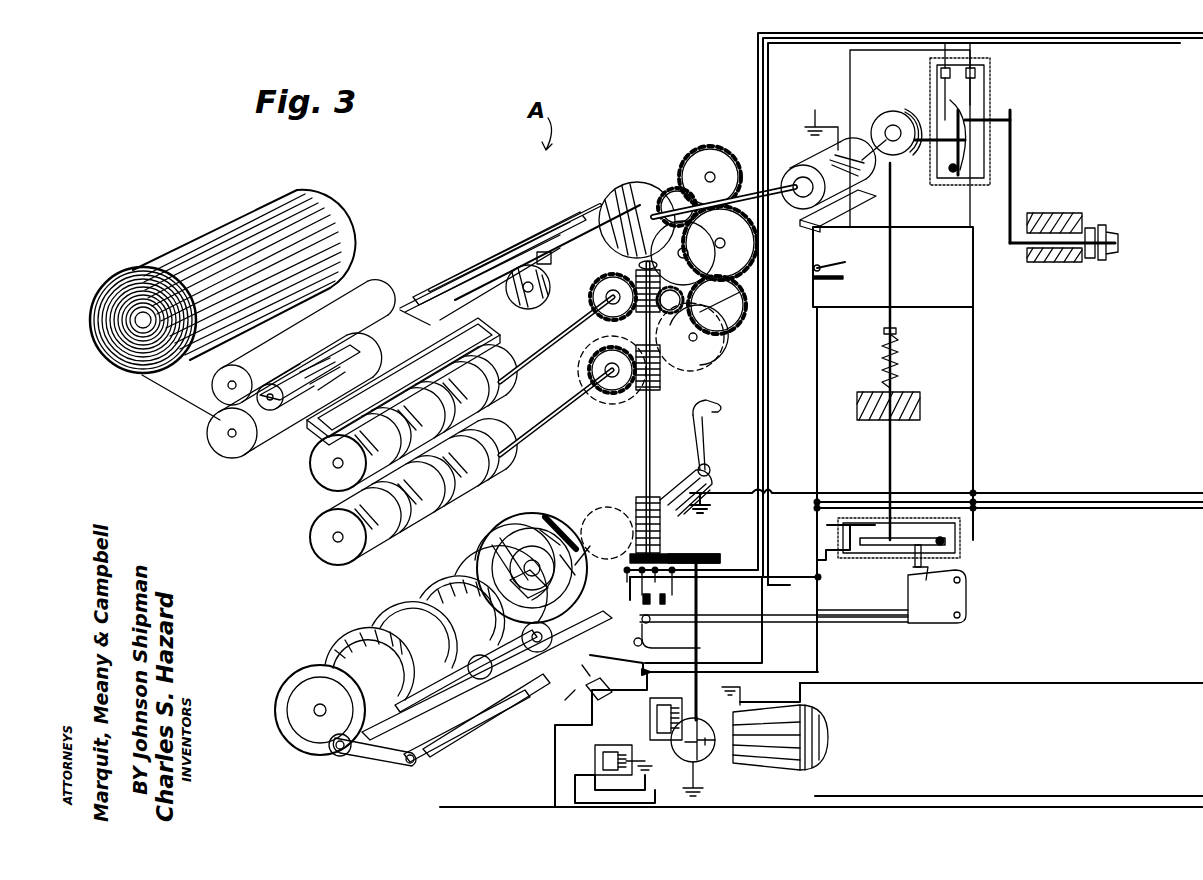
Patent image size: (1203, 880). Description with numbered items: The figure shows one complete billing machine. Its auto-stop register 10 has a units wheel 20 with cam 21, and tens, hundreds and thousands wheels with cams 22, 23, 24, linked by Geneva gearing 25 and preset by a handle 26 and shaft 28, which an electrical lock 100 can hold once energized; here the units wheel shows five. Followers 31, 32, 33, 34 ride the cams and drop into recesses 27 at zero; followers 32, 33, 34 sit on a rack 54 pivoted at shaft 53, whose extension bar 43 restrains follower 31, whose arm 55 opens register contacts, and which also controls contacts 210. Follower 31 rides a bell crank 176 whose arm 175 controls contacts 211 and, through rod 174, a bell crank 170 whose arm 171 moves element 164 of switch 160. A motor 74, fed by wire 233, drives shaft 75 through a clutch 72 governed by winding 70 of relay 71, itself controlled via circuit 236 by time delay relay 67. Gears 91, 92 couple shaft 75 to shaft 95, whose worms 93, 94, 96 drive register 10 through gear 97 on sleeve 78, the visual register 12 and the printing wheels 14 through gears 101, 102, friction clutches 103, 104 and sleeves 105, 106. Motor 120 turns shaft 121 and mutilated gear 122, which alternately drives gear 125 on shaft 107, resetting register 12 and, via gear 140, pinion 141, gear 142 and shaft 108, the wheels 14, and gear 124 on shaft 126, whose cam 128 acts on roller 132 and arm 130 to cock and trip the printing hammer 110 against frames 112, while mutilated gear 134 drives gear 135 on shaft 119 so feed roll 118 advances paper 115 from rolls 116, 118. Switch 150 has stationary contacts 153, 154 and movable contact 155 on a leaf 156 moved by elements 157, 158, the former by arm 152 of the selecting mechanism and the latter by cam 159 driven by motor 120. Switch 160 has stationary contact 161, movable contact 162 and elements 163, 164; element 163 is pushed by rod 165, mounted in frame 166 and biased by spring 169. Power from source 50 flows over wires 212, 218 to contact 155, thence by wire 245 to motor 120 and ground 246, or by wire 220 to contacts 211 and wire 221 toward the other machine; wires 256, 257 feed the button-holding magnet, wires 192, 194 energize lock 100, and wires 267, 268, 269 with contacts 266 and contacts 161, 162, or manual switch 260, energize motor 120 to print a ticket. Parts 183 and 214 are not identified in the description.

The auto-stop register 10 is at (311, 637).
The visual register 12 is at (317, 544).
The printing wheels 14 is at (301, 478).
The units wheel 20 is at (532, 515).
The cam 21 is at (500, 560).
The cam 22 is at (430, 610).
The cam 23 is at (380, 640).
The cam 24 is at (300, 690).
The Geneva gearing 25 is at (508, 545).
The handle 26 is at (716, 410).
The recesses 27 is at (478, 580).
The shaft 28 is at (698, 462).
The follower 31 is at (529, 588).
The follower 32 is at (505, 702).
The follower 33 is at (473, 746).
The follower 34 is at (336, 758).
The extension bar 43 is at (534, 680).
The source of power 50 is at (470, 797).
The shaft 53 is at (487, 733).
The follower rack 54 is at (385, 768).
The arm 55 is at (588, 698).
The time delay relay 67 is at (612, 745).
The winding 70 is at (684, 755).
The relay 71 is at (670, 698).
The clutch 72 is at (695, 770).
The motor 74 is at (790, 730).
The drive shaft 75 is at (698, 648).
The sleeve 78 is at (578, 534).
The gear 91 is at (700, 555).
The gear 92 is at (668, 555).
The worm 93 is at (674, 511).
The worm 94 is at (660, 380).
The shaft 95 is at (644, 430).
The worm 96 is at (662, 289).
The gear 97 is at (603, 500).
The electrical locking means 100 is at (705, 492).
The gear 101 is at (628, 392).
The gear 102 is at (555, 330).
The friction clutch 103 is at (588, 366).
The friction clutch 104 is at (603, 318).
The driving sleeve 105 is at (570, 396).
The driving sleeve 106 is at (520, 338).
The shaft 107 is at (700, 358).
The shaft 108 is at (683, 253).
The printing hammer 110 is at (415, 292).
The frames 112 is at (312, 432).
The roll of paper 115 is at (300, 205).
The roll 116 is at (210, 392).
The feeding roll 118 is at (206, 436).
The shaft 119 is at (555, 222).
The motor 120 is at (818, 165).
The drive shaft 121 is at (752, 235).
The mutilated gear 122 is at (755, 258).
The gear 124 is at (706, 150).
The gear 125 is at (748, 316).
The shaft 126 is at (670, 190).
The cam 128 is at (520, 306).
The arm 130 is at (470, 285).
The roller 132 is at (542, 252).
The mutilated gear 134 is at (630, 185).
The gear 135 is at (575, 200).
The gear 140 is at (725, 352).
The pinion 141 is at (748, 300).
The gear 142 is at (700, 290).
The contact switch 150 is at (990, 70).
The switch actuating arm 152 is at (1013, 138).
The stationary contact 153 is at (938, 76).
The stationary contact 154 is at (975, 90).
The movable contact 155 is at (950, 100).
The resilient leaf 156 is at (958, 172).
The control element 157 is at (1000, 118).
The control element 158 is at (928, 148).
The cam 159 is at (893, 111).
The contact switch 160 is at (960, 545).
The stationary contact 161 is at (853, 550).
The movable contact 162 is at (880, 548).
The actuating element 163 is at (893, 482).
The actuating element 164 is at (923, 565).
The rod 165 is at (893, 437).
The frame element 166 is at (887, 118).
The spring 169 is at (900, 345).
The bell crank 170 is at (974, 595).
The arm 171 is at (922, 578).
The rod 174 is at (905, 622).
The arm 175 is at (650, 624).
The bell crank 176 is at (612, 620).
The clamp 183 is at (1070, 212).
The wire 192 is at (832, 500).
The wire 194 is at (1128, 491).
The contacts 210 is at (620, 670).
The contacts 211 is at (626, 584).
The wire 212 is at (556, 758).
The wire 214 is at (757, 40).
The wire 218 is at (818, 308).
The wire 220 is at (767, 80).
The wire 221 is at (762, 60).
The wire 233 is at (1145, 682).
The circuit 236 is at (1152, 784).
The wire 245 is at (850, 66).
The ground 246 is at (815, 112).
The wire 256 is at (1088, 509).
The wire 257 is at (1088, 44).
The manual switch 260 is at (848, 260).
The contacts 266 is at (668, 608).
The wire 267 is at (765, 566).
The wire 268 is at (771, 586).
The wire 269 is at (975, 360).